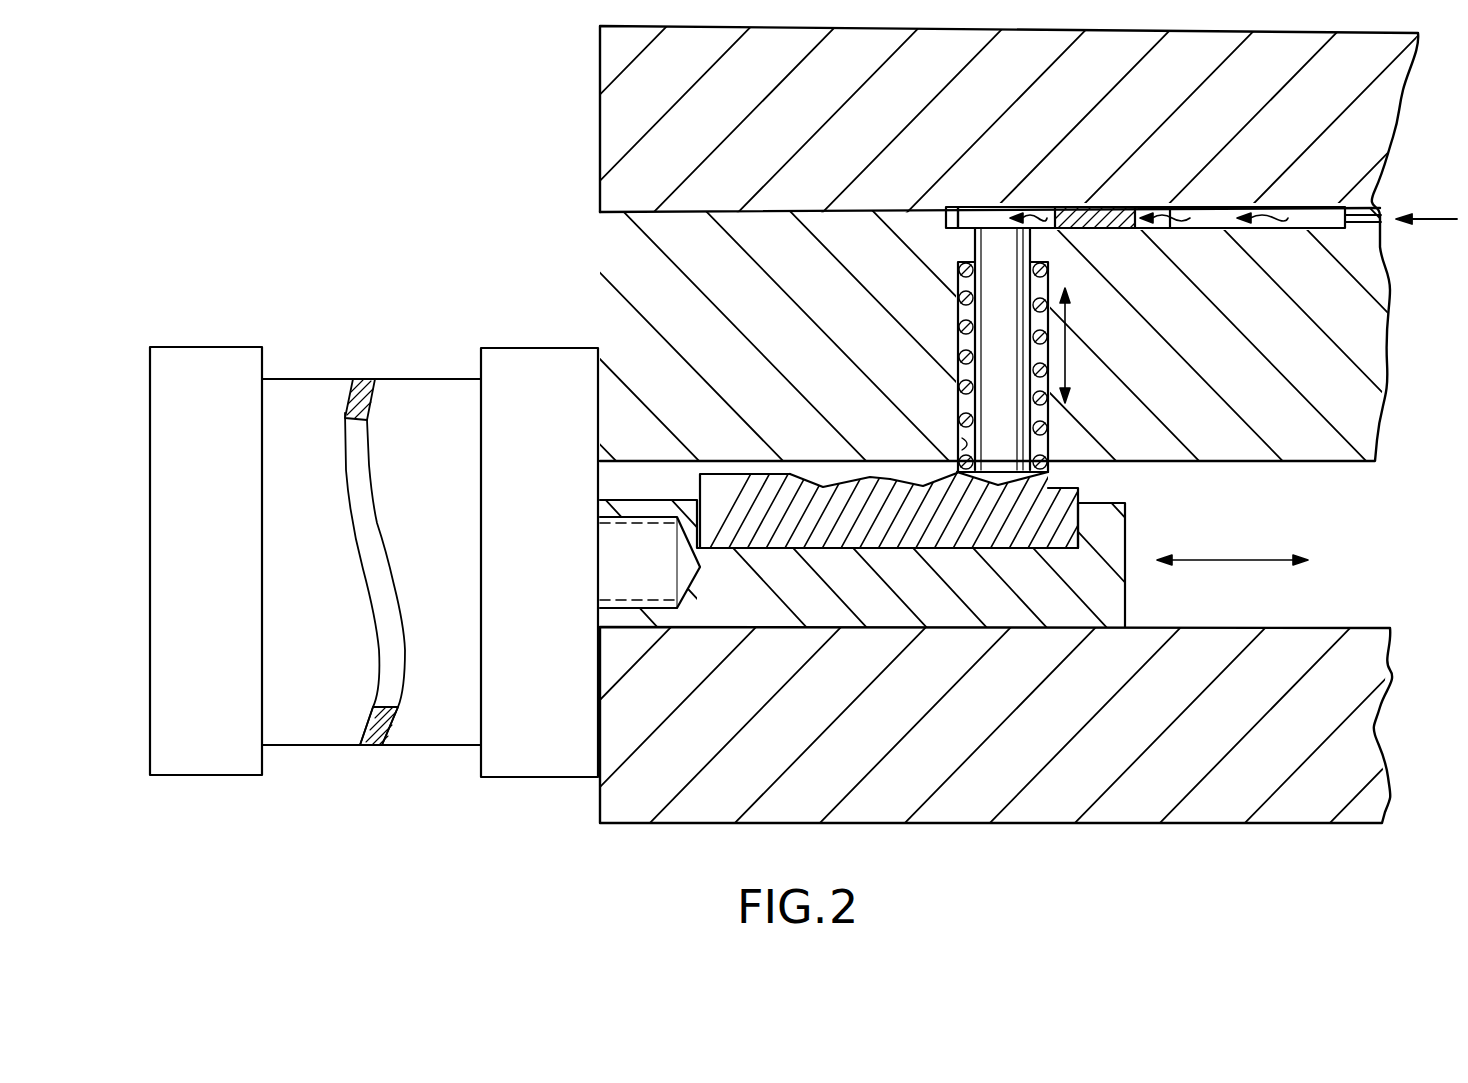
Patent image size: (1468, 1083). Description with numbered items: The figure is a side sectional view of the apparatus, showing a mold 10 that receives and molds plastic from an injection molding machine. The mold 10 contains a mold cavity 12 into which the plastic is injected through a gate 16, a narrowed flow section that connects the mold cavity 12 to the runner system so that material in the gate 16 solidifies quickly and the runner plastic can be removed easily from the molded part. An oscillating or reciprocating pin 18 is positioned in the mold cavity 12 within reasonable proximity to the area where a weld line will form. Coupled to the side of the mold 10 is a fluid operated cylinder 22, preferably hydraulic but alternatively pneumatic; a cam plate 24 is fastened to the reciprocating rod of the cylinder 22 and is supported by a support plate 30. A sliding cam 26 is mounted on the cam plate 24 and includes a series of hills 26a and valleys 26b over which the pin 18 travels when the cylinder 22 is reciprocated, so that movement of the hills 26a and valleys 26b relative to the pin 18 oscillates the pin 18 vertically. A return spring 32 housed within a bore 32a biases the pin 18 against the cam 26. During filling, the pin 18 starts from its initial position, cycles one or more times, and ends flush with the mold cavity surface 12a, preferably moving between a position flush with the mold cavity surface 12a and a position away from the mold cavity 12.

The mold 10 is at (600, 128).
The mold cavity 12 is at (985, 207).
The mold cavity surface 12a is at (963, 222).
The gate 16 is at (1370, 192).
The pin 18 is at (987, 250).
The fluid operated cylinder 22 is at (311, 379).
The cam plate 24 is at (1125, 603).
The sliding cam 26 is at (1080, 493).
The hills 26a is at (865, 472).
The valleys 26b is at (913, 488).
The support plate 30 is at (1375, 737).
The return spring 32 is at (960, 390).
The bore 32a is at (957, 433).